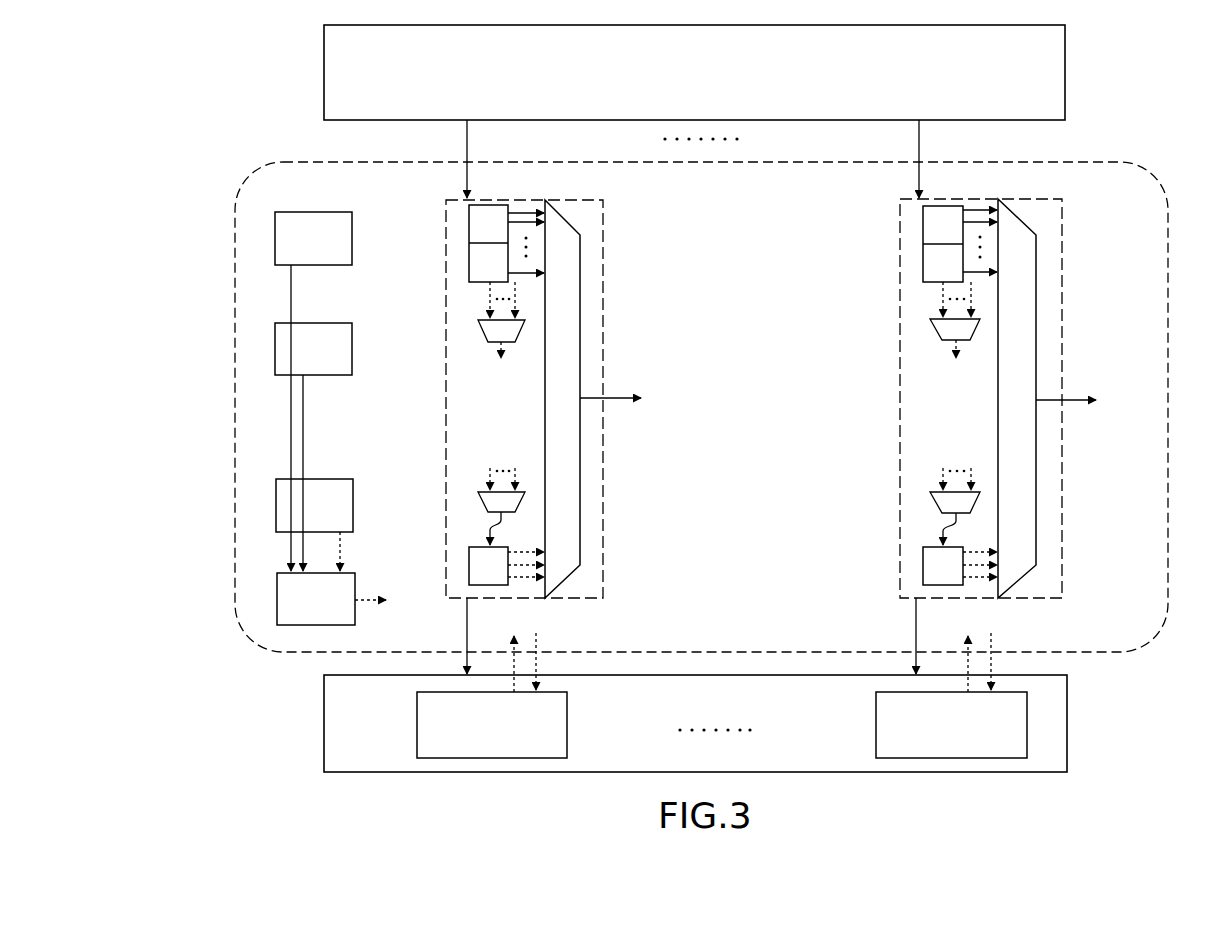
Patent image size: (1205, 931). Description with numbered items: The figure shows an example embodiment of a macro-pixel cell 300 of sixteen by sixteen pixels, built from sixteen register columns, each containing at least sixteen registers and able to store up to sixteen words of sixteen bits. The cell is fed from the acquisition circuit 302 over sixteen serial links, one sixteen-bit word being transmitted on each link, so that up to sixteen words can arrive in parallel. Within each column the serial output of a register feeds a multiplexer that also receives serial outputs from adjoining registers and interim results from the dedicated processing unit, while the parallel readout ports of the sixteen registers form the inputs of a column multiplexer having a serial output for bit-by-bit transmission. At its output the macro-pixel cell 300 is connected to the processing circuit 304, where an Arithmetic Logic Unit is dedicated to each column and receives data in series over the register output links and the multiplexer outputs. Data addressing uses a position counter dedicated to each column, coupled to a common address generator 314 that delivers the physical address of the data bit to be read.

The macro-pixel cell 300 is at (233, 392).
The acquisition circuit 302 is at (320, 68).
The processing circuit 304 is at (322, 740).
The address generator 314 is at (273, 597).